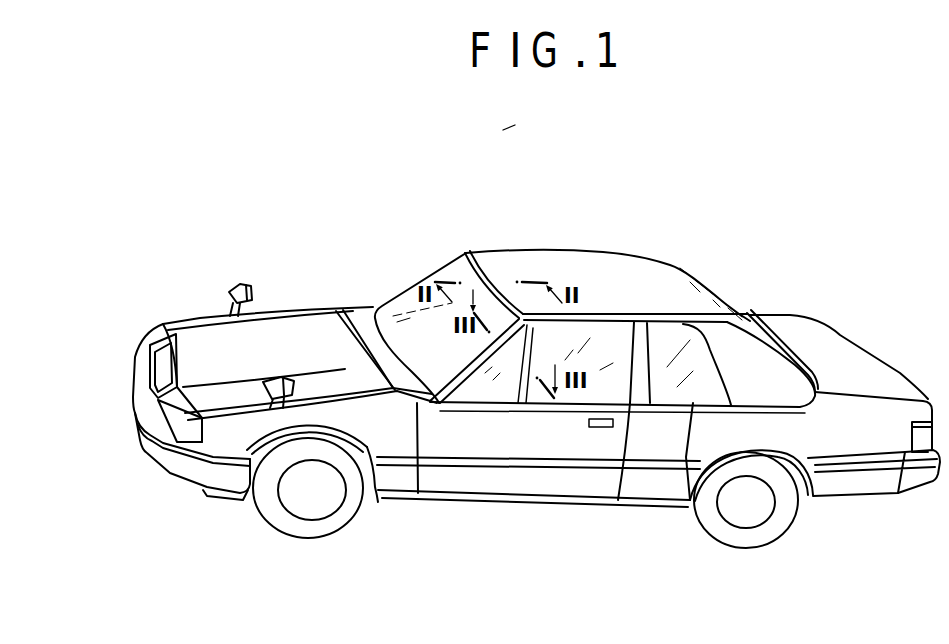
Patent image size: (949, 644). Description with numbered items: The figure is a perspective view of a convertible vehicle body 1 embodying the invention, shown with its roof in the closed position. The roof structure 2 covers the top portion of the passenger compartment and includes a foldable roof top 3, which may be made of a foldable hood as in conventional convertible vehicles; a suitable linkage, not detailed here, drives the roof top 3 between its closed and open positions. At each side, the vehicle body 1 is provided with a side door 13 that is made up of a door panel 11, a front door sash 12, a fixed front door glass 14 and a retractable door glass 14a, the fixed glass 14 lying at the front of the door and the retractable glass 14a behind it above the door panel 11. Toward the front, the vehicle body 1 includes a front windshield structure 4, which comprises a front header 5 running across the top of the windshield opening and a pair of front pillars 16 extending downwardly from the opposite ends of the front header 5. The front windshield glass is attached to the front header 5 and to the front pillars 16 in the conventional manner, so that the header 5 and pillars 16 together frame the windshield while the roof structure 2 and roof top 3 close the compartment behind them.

The convertible vehicle body 1 is at (299, 306).
The roof structure 2 is at (599, 248).
The foldable roof top 3 is at (640, 268).
The front windshield structure 4 is at (394, 307).
The front header 5 is at (480, 251).
The door panel 11 is at (512, 485).
The front door sash 12 is at (478, 380).
The side door 13 is at (525, 545).
The fixed front door glass 14 is at (500, 390).
The retractable door glass 14a is at (578, 391).
The front pillar 16 is at (466, 360).